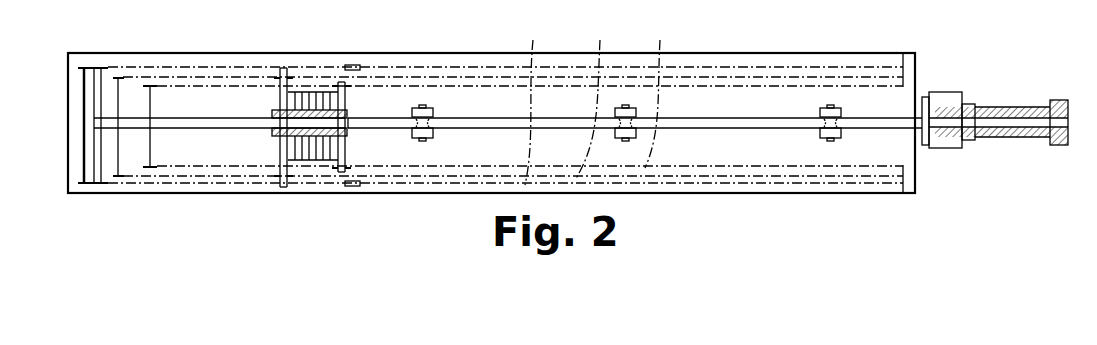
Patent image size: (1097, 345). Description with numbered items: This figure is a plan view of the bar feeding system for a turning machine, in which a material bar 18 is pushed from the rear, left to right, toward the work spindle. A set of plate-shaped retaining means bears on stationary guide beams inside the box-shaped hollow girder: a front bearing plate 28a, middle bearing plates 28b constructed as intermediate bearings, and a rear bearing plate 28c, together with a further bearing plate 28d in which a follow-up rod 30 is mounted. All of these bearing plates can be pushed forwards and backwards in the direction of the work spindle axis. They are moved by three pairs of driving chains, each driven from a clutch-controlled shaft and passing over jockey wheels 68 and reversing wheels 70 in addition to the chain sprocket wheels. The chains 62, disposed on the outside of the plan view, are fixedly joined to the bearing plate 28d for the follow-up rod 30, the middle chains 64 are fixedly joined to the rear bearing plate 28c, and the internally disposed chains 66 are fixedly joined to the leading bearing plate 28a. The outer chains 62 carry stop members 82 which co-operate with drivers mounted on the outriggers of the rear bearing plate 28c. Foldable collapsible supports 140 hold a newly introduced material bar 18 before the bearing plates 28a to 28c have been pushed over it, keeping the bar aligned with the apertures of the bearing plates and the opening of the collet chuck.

The material bar 18 is at (722, 118).
The front bearing plate 28a is at (341, 82).
The middle bearing plates 28b is at (328, 94).
The rear bearing plate 28c is at (280, 68).
The bearing plate 28d is at (97, 68).
The follow-up rod 30 is at (225, 125).
The driving chains 62 is at (505, 68).
The driving chains 64 is at (573, 75).
The driving chains 66 is at (638, 87).
The jockey wheels 68 is at (149, 170).
The reversing wheels 70 is at (905, 193).
The stop members 82 is at (360, 66).
The collapsible supports 140 is at (433, 137).